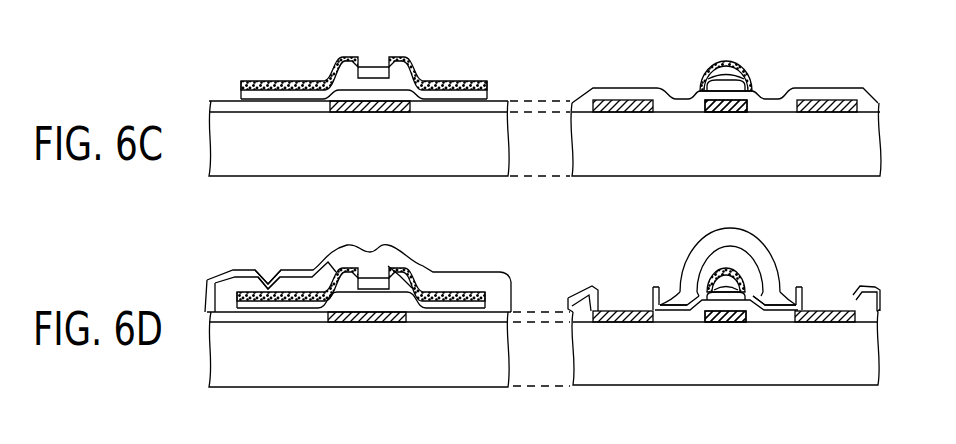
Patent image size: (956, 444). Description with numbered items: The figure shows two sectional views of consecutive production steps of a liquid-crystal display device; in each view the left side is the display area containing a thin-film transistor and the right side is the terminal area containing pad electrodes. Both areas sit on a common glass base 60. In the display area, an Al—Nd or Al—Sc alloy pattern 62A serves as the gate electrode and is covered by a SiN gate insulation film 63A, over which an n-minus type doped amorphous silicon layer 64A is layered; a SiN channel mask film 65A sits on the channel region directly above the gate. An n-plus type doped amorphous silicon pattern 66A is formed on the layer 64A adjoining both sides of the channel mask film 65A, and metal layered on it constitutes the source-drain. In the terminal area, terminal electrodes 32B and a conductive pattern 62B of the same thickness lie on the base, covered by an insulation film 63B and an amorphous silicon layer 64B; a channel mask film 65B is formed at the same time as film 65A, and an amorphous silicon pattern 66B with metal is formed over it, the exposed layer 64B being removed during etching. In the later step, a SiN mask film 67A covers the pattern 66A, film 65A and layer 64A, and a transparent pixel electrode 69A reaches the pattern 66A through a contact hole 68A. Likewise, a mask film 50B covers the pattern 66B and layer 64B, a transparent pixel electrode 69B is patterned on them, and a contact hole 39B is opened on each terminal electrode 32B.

In FIG. 6C, the glass base 60 is at (457, 163).
In FIG. 6D, the glass base 60 is at (447, 368).
In FIG. 6C, the alloy pattern 62A is at (362, 107).
In FIG. 6D, the alloy pattern 62A is at (360, 318).
In FIG. 6C, the gate insulation film 63A is at (227, 100).
In FIG. 6D, the gate insulation film 63A is at (223, 317).
In FIG. 6C, the amorphous silicon layer 64A is at (275, 92).
In FIG. 6D, the amorphous silicon layer 64A is at (453, 307).
In FIG. 6C, the channel mask film 65A is at (378, 72).
In FIG. 6D, the channel mask film 65A is at (375, 282).
In FIG. 6C, the amorphous silicon pattern 66A is at (438, 84).
In FIG. 6D, the amorphous silicon pattern 66A is at (420, 288).
In FIG. 6D, the mask film 67A is at (490, 276).
In FIG. 6D, the contact hole 68A is at (300, 267).
In FIG. 6D, the transparent pixel electrode 69A is at (265, 285).
In FIG. 6C, the terminal electrodes 32B is at (618, 100).
In FIG. 6D, the terminal electrodes 32B is at (628, 311).
In FIG. 6D, the contact hole 39B is at (613, 302).
In FIG. 6D, the mask film 50B is at (783, 297).
In FIG. 6C, the conductive pattern 62B is at (705, 97).
In FIG. 6D, the conductive pattern 62B is at (678, 280).
In FIG. 6C, the insulation film 63B is at (818, 91).
In FIG. 6D, the insulation film 63B is at (663, 311).
In FIG. 6C, the amorphous silicon layer 64B is at (757, 81).
In FIG. 6D, the amorphous silicon layer 64B is at (757, 267).
In FIG. 6C, the channel mask film 65B is at (733, 73).
In FIG. 6D, the channel mask film 65B is at (730, 268).
In FIG. 6C, the amorphous silicon pattern 66B is at (727, 63).
In FIG. 6D, the amorphous silicon pattern 66B is at (713, 272).
In FIG. 6D, the transparent pixel electrode 69B is at (748, 245).